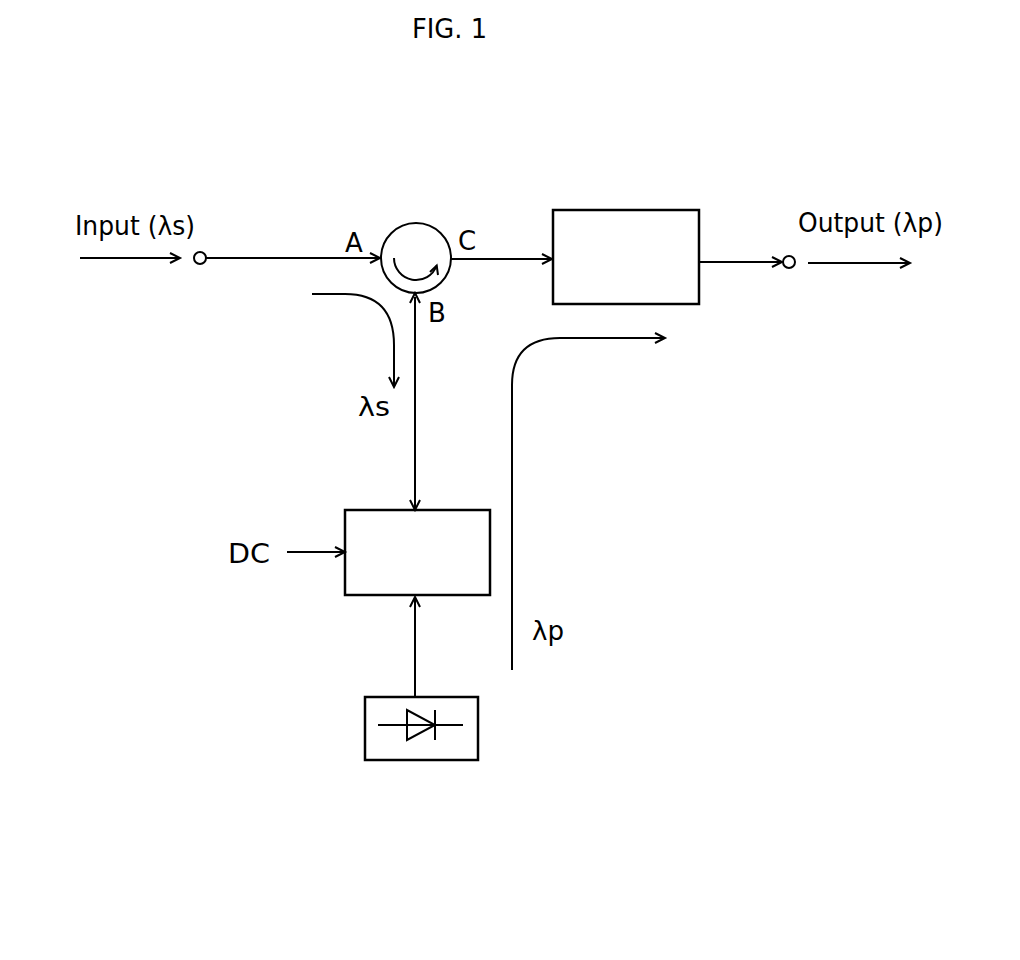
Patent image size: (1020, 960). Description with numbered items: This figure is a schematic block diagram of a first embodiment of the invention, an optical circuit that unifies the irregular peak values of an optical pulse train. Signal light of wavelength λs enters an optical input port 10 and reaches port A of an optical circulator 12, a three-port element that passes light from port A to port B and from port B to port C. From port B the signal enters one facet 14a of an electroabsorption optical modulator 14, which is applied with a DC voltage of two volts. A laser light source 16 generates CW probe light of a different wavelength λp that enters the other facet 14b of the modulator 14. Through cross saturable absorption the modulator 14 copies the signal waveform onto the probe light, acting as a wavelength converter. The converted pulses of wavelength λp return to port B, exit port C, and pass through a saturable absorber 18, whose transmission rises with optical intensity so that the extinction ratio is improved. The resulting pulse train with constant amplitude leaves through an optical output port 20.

The optical input port 10 is at (200, 264).
The optical circulator 12 is at (425, 232).
The electroabsorption optical modulator 14 is at (347, 522).
The one facet of electroabsorption optical modulator 14a is at (381, 500).
The other facet of electroabsorption optical modulator 14b is at (378, 607).
The laser light source 16 is at (430, 762).
The saturable absorber 18 is at (629, 220).
The optical output port 20 is at (789, 268).